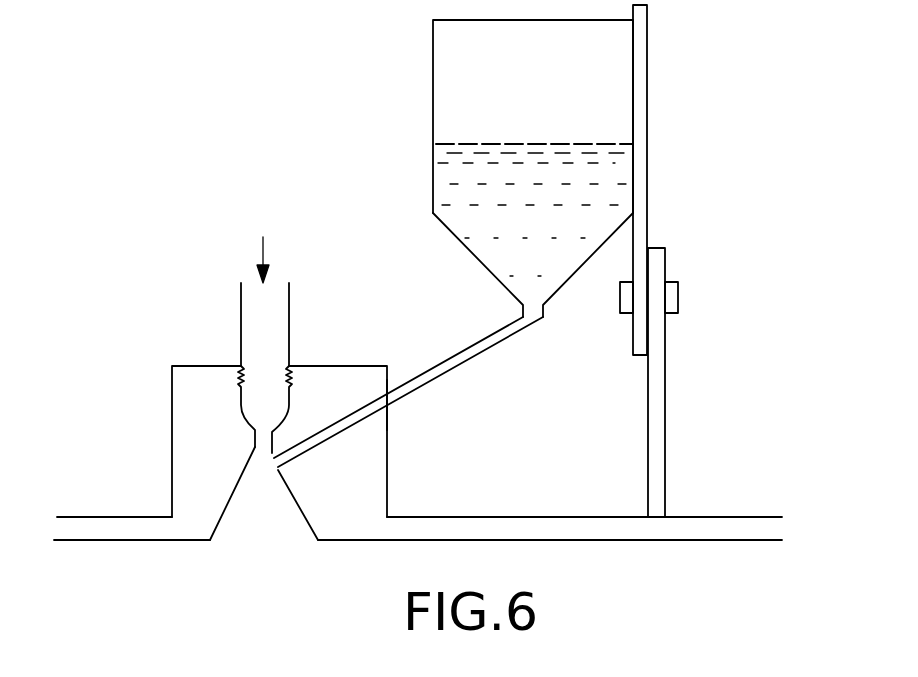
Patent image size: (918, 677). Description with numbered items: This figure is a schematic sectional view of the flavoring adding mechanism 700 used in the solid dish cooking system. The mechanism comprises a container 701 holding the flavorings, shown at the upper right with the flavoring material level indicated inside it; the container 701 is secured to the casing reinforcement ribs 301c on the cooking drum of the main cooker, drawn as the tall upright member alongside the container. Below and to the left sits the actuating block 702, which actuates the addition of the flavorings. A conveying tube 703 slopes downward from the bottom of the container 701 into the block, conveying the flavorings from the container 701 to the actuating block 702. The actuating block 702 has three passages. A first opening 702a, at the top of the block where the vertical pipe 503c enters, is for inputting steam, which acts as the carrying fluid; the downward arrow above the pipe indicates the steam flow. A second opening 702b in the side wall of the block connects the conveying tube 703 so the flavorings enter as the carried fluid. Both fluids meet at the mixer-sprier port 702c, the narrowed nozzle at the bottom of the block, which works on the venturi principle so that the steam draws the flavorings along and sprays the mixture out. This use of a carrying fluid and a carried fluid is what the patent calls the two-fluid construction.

The flavoring adding mechanism 700 is at (674, 143).
The container 701 is at (433, 160).
The conveying tube 703 is at (434, 367).
The casing reinforcement ribs 301c is at (665, 460).
The feed pipe 503c is at (241, 318).
The actuating block 702 is at (172, 430).
The first opening 702a is at (255, 378).
The second opening 702b is at (383, 408).
The mixer-sprier port 702c is at (259, 475).